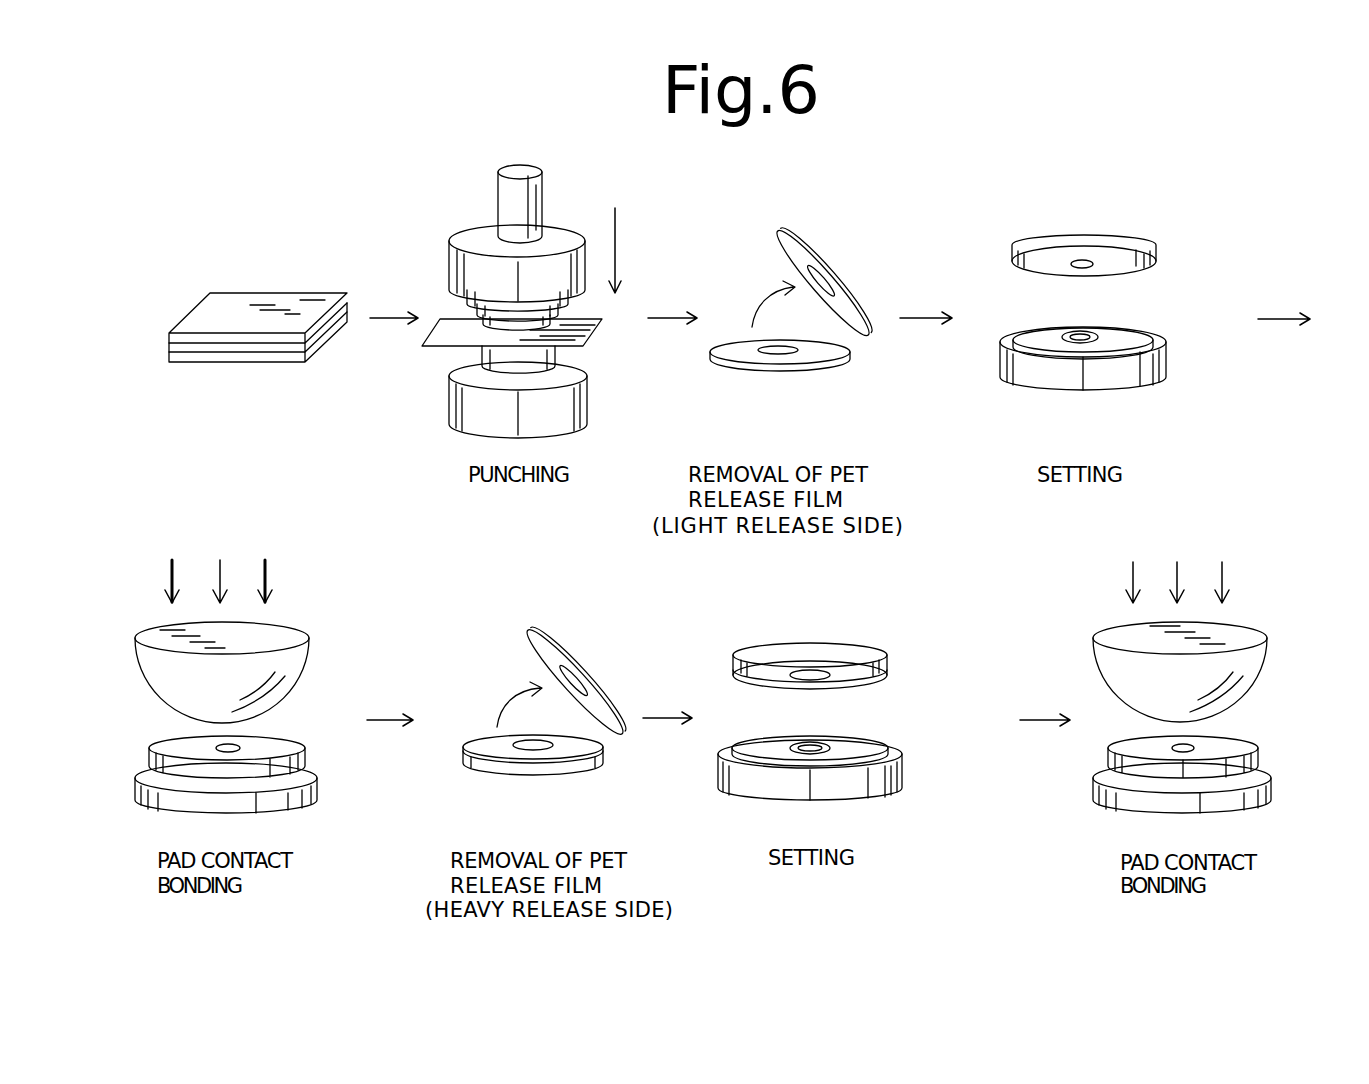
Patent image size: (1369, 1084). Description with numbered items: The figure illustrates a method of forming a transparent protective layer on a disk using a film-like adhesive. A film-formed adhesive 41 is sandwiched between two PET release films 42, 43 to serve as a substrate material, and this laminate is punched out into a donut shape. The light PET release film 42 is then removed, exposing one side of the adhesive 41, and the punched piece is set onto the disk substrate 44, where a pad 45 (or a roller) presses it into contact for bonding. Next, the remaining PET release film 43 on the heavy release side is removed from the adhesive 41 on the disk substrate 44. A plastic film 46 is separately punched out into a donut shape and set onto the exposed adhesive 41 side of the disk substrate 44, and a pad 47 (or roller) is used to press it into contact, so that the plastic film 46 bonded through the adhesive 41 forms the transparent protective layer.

The film-formed adhesive 41 is at (287, 348).
The light PET release film 42 is at (237, 300).
The PET release film 43 is at (200, 365).
The disk substrate 44 is at (1127, 238).
The pad 45 is at (293, 663).
The plastic film 46 is at (880, 748).
The pad 47 is at (1243, 668).